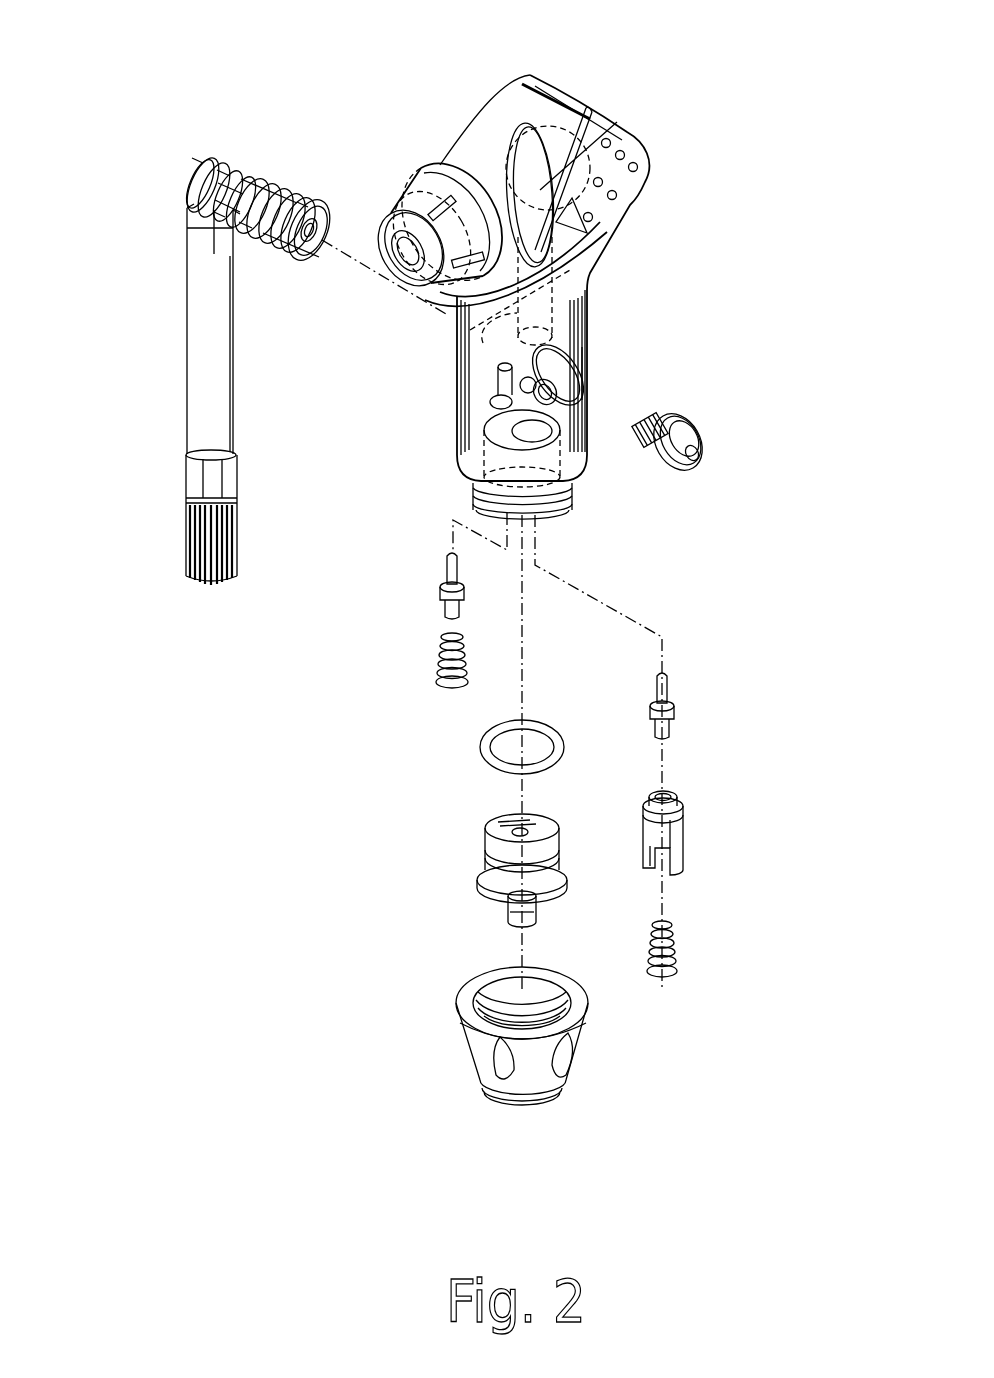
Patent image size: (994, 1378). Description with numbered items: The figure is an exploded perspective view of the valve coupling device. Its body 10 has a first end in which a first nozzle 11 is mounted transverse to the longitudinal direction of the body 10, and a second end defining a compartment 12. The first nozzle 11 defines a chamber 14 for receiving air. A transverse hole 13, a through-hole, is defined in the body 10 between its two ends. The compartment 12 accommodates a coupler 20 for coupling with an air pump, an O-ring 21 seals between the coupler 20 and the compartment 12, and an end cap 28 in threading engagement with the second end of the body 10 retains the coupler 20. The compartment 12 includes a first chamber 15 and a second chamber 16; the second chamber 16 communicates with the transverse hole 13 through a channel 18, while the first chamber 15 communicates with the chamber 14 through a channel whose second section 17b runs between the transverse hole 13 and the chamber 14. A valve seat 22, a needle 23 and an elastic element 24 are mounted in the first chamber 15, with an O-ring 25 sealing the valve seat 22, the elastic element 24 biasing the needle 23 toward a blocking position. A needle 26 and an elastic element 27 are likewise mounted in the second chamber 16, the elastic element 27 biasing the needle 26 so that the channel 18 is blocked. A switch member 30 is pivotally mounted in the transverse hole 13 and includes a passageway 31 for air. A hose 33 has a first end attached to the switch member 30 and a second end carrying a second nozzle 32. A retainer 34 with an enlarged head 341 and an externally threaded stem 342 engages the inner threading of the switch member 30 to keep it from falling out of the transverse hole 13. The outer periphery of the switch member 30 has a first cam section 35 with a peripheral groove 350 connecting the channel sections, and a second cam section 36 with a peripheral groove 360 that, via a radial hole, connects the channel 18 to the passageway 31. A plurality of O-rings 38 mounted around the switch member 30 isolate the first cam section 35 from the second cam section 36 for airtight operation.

The body 10 is at (632, 143).
The first nozzle 11 is at (397, 223).
The compartment 12 is at (563, 490).
The transverse hole 13 is at (563, 362).
The chamber 14 is at (490, 150).
The first chamber 15 is at (547, 392).
The second chamber 16 is at (490, 417).
The second section 17b is at (545, 300).
The channel 18 is at (495, 385).
The coupler 20 is at (498, 879).
The O-ring 21 is at (490, 740).
The valve seat 22 is at (673, 856).
The needle 23 is at (672, 706).
The elastic element 24 is at (678, 942).
The O-ring 25 is at (680, 822).
The needle 26 is at (443, 591).
The elastic element 27 is at (443, 648).
The end cap 28 is at (477, 1042).
The switch member 30 is at (200, 177).
The passageway 31 is at (318, 218).
The second nozzle 32 is at (201, 537).
The hose 33 is at (201, 374).
The retainer 34 is at (688, 430).
The first cam section 35 is at (275, 182).
The second cam section 36 is at (240, 157).
The O-rings 38 is at (232, 243).
The enlarged head 341 is at (683, 457).
The stem 342 is at (655, 415).
The peripheral groove 350 is at (320, 205).
The peripheral groove 360 is at (207, 160).